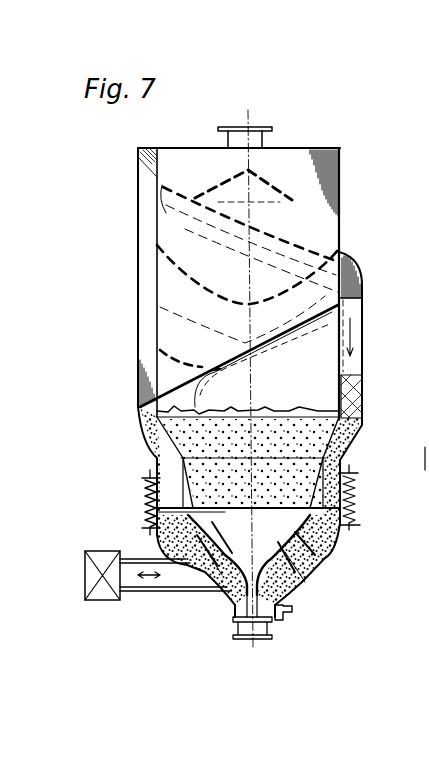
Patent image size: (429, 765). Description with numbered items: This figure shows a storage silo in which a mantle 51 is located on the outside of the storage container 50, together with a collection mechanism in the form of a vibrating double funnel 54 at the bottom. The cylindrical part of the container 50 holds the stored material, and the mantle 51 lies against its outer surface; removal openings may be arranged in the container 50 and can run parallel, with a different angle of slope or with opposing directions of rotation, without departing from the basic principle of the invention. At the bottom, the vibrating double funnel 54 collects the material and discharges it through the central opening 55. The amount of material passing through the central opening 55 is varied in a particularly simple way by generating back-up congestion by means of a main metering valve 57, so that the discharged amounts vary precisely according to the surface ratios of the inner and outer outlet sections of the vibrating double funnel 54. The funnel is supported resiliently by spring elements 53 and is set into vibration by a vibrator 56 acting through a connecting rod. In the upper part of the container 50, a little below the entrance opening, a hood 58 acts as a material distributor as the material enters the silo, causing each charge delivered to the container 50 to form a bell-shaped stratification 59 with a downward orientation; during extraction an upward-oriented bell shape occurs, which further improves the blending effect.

The container 50 is at (342, 214).
The mantle 51 is at (363, 335).
The spring support 53 is at (345, 466).
The vibrating double funnel 54 is at (226, 603).
The central opening 55 is at (296, 580).
The vibrator 56 is at (90, 571).
The main metering valve 57 is at (284, 617).
The hood 58 is at (279, 185).
The bell-shaped stratification 59 is at (192, 320).